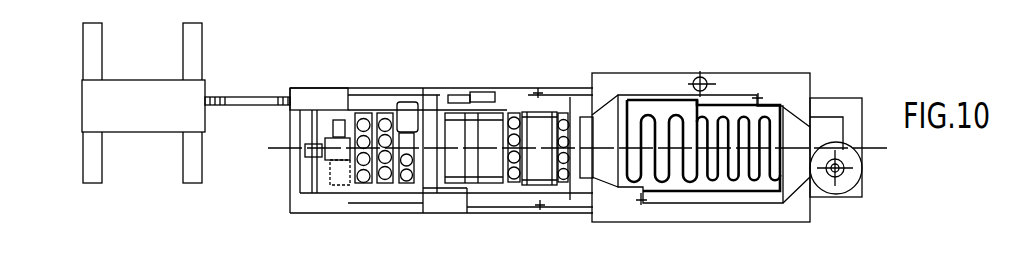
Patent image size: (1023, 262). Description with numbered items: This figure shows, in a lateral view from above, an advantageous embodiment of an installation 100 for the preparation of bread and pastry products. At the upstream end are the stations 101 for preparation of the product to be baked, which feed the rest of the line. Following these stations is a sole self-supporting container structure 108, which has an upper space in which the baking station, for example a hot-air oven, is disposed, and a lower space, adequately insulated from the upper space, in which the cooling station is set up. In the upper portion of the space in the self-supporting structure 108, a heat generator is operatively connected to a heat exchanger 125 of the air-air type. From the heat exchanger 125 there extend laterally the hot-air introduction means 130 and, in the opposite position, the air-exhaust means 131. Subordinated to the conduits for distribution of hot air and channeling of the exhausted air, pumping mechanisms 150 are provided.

The installation 100 is at (516, 80).
The stations for preparation of the product to be baked 101 is at (283, 164).
The self-supporting container structure 108 is at (647, 82).
The heat exchanger 125 is at (732, 113).
The hot-air introduction means 130 is at (604, 88).
The air-exhaust means 131 is at (797, 118).
The pumping mechanisms 150 is at (837, 160).